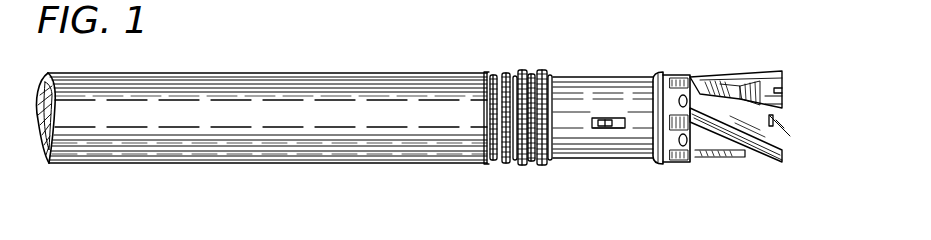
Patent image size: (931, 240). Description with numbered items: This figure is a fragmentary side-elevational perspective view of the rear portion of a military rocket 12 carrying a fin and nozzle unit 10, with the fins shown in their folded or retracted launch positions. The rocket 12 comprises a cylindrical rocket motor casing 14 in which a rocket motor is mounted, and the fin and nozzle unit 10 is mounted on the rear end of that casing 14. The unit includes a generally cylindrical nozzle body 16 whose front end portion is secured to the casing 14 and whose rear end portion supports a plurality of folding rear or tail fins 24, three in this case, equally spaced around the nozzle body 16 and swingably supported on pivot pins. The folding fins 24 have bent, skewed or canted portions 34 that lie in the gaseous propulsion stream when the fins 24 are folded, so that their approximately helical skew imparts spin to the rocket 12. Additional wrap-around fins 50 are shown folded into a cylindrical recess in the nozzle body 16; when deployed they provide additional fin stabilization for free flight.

The fin and nozzle unit 10 is at (677, 60).
The military rocket 12 is at (264, 58).
The cylindrical rocket motor casing 14 is at (409, 73).
The nozzle body 16 is at (523, 70).
The folding fins 24 is at (727, 74).
The bent portions 34 is at (765, 100).
The wrap-around fins 50 is at (578, 78).